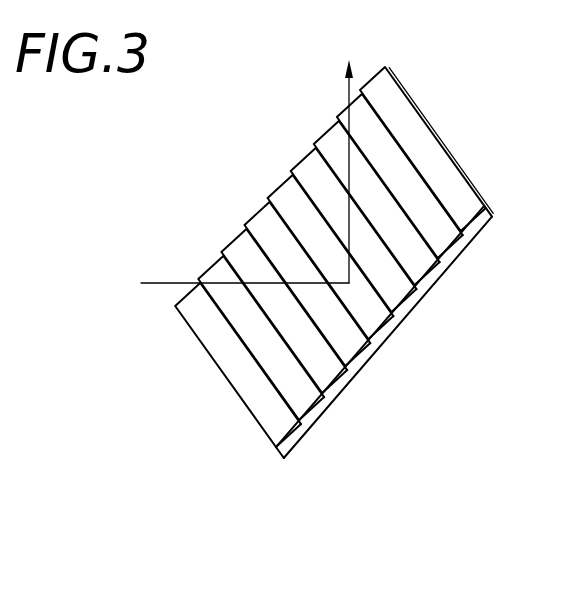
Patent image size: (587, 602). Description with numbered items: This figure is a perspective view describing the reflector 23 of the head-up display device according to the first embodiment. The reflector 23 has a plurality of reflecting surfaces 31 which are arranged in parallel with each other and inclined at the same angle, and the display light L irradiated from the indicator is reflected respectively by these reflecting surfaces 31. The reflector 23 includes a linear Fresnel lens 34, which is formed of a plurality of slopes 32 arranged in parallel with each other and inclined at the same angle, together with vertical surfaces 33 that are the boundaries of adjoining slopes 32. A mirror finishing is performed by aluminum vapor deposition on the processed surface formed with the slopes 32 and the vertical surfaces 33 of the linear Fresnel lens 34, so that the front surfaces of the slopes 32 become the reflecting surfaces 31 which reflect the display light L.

The reflector 23 is at (410, 380).
The reflecting surface 31 is at (258, 220).
The slope 32 is at (366, 326).
The vertical surface 33 is at (387, 334).
The linear Fresnel lens 34 is at (427, 282).
The display light L is at (163, 281).